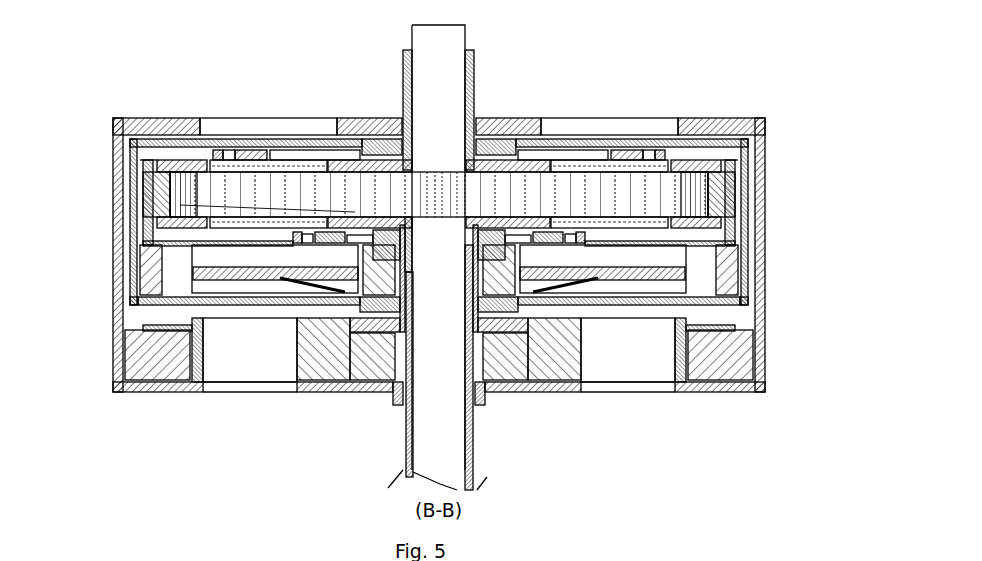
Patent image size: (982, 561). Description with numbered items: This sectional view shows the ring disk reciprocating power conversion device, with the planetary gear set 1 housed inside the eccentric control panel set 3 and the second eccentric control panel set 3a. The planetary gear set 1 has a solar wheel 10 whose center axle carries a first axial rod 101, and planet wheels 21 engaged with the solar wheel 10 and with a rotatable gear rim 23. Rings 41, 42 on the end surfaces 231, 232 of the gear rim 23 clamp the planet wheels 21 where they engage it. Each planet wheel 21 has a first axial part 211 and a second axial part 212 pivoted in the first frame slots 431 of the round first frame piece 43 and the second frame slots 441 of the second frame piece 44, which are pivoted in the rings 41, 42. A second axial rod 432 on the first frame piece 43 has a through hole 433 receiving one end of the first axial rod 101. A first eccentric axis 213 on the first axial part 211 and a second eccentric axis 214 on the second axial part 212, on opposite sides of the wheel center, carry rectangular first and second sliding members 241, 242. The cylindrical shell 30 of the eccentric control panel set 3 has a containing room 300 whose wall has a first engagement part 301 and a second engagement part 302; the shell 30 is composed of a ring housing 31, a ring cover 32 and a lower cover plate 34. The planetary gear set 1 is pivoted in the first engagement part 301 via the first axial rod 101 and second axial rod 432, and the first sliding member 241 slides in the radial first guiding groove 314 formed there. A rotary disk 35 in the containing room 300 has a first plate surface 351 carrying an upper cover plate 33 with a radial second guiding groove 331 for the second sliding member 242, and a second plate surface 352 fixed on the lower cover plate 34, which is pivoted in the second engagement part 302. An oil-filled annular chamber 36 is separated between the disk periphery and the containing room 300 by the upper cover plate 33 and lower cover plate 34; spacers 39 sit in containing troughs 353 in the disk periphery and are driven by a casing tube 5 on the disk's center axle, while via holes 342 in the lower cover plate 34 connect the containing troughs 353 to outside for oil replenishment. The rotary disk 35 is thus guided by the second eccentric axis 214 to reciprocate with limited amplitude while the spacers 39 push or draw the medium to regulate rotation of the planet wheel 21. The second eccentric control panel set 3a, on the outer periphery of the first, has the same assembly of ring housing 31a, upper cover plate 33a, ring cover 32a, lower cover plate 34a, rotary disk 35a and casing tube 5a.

The planetary gear set 1 is at (395, 215).
The solar wheel 10 is at (458, 189).
The first axial rod 101 is at (447, 433).
The eccentric control panel set 3 is at (225, 332).
The second eccentric control panel set 3a is at (156, 402).
The shell 30 is at (117, 142).
The containing room 300 is at (745, 262).
The first engagement part 301 is at (140, 176).
The second engagement part 302 is at (157, 293).
The ring housing 31 is at (133, 157).
The ring housing 31a is at (755, 158).
The first guiding groove 314 is at (279, 152).
The ring cover 32 is at (150, 303).
The ring cover 32a is at (750, 343).
The upper cover plate 33 is at (150, 243).
The upper cover plate 33a is at (720, 325).
The second guiding groove 331 is at (310, 272).
The lower cover plate 34 is at (157, 327).
The via hole 342 is at (560, 362).
The lower cover plate 34a is at (738, 397).
The rotary disk 35 is at (343, 377).
The rotary disk 35a is at (353, 397).
The first plate surface 351 is at (180, 205).
The second plate surface 352 is at (383, 360).
The containing trough 353 is at (583, 360).
The annular chamber 36 is at (175, 270).
The spacer 39 is at (157, 350).
The planet wheel 21 is at (667, 203).
The first axial part 211 is at (193, 167).
The second axial part 212 is at (185, 222).
The first eccentric axis 213 is at (228, 152).
The second eccentric axis 214 is at (439, 350).
The gear rim 23 is at (733, 187).
The end surface 231 is at (765, 133).
The end surface 232 is at (725, 222).
The first sliding member 241 is at (250, 153).
The second sliding member 242 is at (300, 226).
The ring 41 is at (710, 167).
The ring 42 is at (725, 235).
The first frame piece 43 is at (507, 153).
The first frame slot 431 is at (553, 165).
The second axial rod 432 is at (407, 48).
The through hole 433 is at (470, 72).
The second frame piece 44 is at (377, 155).
The second frame slot 441 is at (743, 283).
The casing tube 5 is at (527, 372).
The casing tube 5a is at (475, 417).